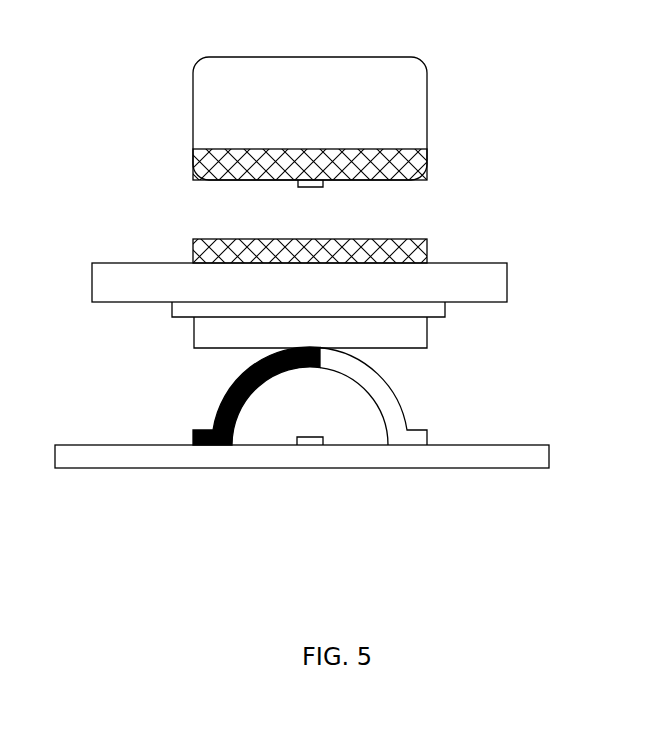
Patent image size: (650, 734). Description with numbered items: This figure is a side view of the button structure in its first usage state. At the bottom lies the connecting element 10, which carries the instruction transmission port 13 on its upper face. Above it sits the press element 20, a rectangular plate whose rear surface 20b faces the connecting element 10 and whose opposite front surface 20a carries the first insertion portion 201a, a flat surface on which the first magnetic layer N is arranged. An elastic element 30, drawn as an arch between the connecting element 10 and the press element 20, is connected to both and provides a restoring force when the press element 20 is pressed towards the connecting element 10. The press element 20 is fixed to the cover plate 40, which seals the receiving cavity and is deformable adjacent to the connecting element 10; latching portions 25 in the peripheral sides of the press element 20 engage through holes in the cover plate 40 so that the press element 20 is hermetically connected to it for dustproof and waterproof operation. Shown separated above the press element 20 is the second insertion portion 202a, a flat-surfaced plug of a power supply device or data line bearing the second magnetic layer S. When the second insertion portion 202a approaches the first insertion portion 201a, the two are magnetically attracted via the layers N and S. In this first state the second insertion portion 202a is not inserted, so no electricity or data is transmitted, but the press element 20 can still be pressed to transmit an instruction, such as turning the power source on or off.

The connecting element 10 is at (520, 460).
The instruction transmission port 13 is at (323, 440).
The press element 20 is at (312, 346).
The front surface 20a is at (370, 147).
The rear surface 20b is at (404, 349).
The latching portions 25 is at (428, 302).
The elastic element 30 is at (225, 392).
The cover plate 40 is at (495, 283).
The first insertion portion 201a is at (233, 240).
The second insertion portion 202a is at (372, 181).
The second magnetic layer S is at (193, 165).
The first magnetic layer N is at (193, 238).